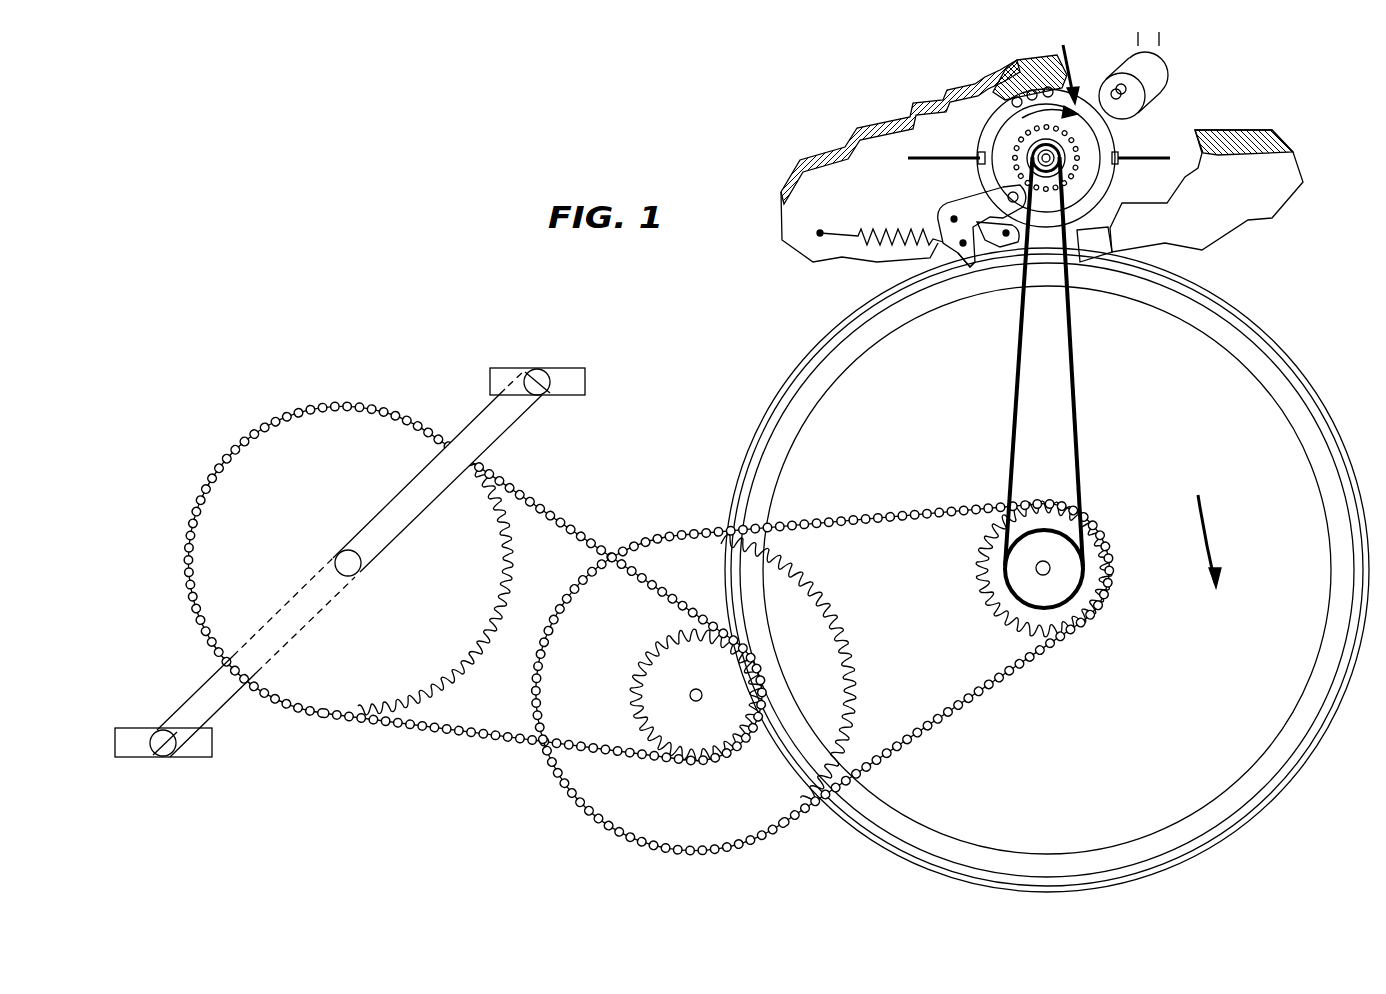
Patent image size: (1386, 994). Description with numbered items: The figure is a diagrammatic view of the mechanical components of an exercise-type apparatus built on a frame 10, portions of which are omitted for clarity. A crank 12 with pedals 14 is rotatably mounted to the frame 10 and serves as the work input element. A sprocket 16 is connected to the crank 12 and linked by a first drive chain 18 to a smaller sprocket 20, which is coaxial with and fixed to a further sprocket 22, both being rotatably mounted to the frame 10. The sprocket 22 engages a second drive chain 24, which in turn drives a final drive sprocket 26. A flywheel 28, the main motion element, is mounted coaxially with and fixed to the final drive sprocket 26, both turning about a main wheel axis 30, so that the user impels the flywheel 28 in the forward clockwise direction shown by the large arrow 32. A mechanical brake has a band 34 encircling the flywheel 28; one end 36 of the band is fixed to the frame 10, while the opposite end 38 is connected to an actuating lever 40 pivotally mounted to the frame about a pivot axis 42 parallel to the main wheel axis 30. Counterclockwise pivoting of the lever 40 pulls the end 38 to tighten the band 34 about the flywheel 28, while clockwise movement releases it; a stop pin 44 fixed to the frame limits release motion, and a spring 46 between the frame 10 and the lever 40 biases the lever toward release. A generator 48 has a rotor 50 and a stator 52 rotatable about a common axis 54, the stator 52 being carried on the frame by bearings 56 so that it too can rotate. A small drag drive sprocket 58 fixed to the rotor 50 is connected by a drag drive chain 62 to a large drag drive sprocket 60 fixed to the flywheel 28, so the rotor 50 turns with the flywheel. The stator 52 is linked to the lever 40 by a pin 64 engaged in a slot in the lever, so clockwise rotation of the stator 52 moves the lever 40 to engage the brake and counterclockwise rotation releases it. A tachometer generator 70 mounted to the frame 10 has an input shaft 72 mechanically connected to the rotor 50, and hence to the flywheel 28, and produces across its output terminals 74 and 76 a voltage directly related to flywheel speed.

The frame 10 is at (850, 148).
The crank 12 is at (512, 408).
The pedals 14 is at (588, 383).
The sprocket 16 is at (342, 690).
The first drive chain 18 is at (474, 740).
The sprocket 20 is at (696, 735).
The sprocket 22 is at (776, 795).
The second drive chain 24 is at (940, 722).
The final drive sprocket 26 is at (1000, 608).
The flywheel 28 is at (1190, 765).
The main wheel axis 30 is at (1048, 567).
The large arrow 32 is at (1212, 522).
The band 34 is at (1254, 311).
The end of band 36 is at (1112, 245).
The opposite end of band 38 is at (967, 265).
The actuating lever 40 is at (972, 205).
The pivot axis 42 is at (953, 219).
The stop pin 44 is at (1007, 237).
The spring 46 is at (880, 258).
The generator 48 is at (1068, 62).
The rotor 50 is at (1085, 143).
The stator 52 is at (1108, 183).
The common axis 54 is at (1047, 143).
The bearings 56 is at (973, 82).
The small drag drive sprocket 58 is at (1043, 228).
The large drag drive sprocket 60 is at (1060, 586).
The drag drive chain 62 is at (1017, 425).
The pin 64 is at (992, 152).
The tachometer generator 70 is at (1168, 72).
The input shaft 72 is at (1126, 91).
The output terminal 74 is at (1159, 33).
The output terminal 76 is at (1138, 34).